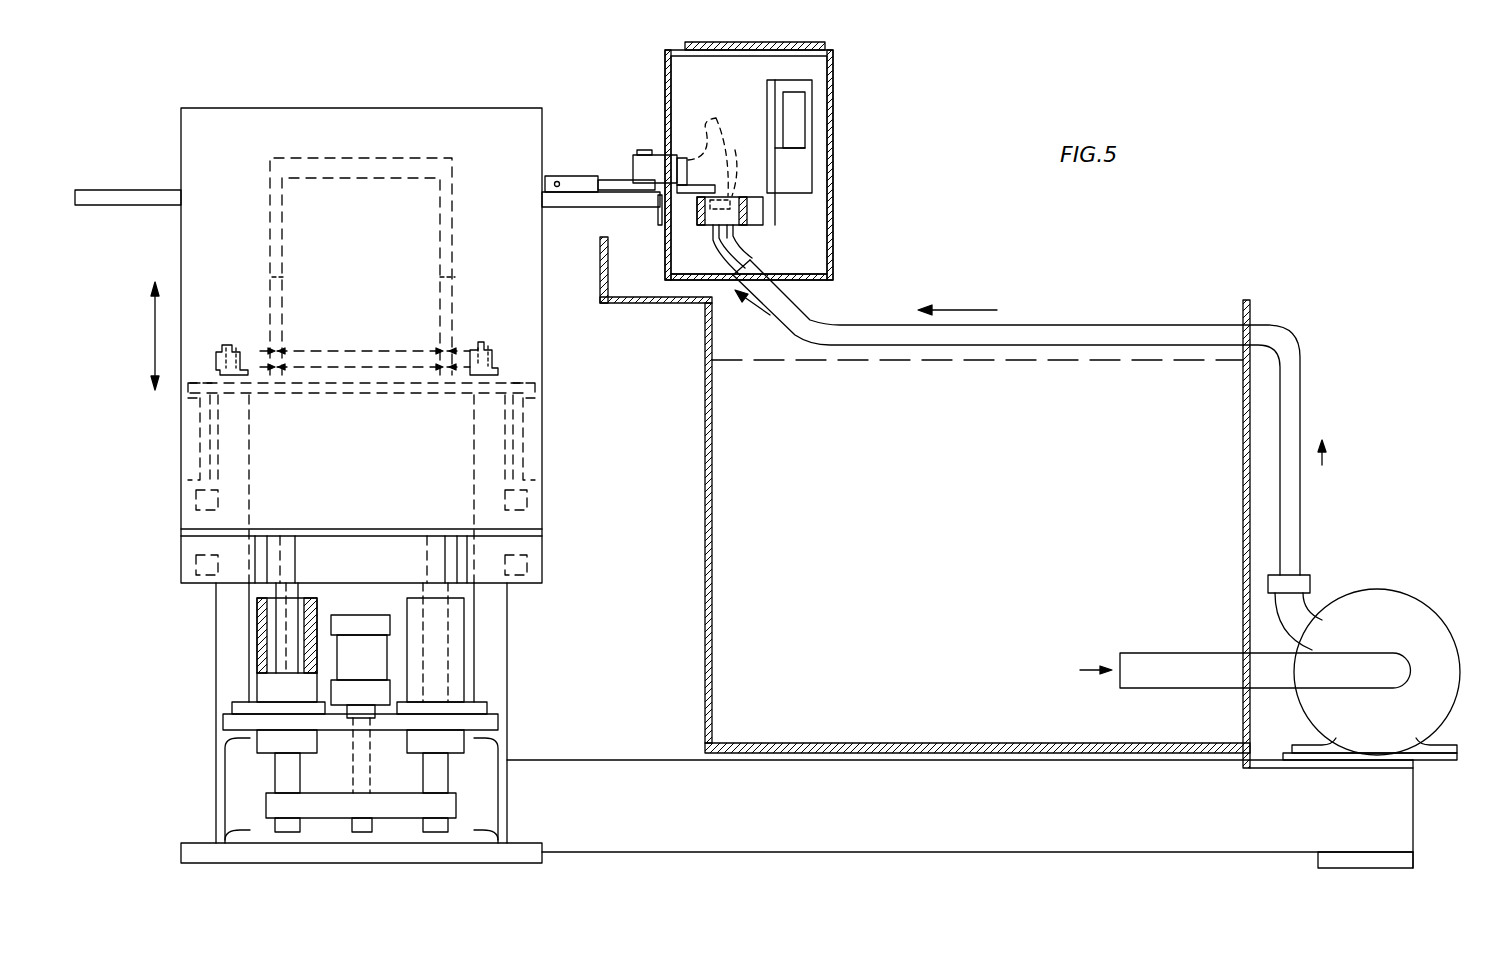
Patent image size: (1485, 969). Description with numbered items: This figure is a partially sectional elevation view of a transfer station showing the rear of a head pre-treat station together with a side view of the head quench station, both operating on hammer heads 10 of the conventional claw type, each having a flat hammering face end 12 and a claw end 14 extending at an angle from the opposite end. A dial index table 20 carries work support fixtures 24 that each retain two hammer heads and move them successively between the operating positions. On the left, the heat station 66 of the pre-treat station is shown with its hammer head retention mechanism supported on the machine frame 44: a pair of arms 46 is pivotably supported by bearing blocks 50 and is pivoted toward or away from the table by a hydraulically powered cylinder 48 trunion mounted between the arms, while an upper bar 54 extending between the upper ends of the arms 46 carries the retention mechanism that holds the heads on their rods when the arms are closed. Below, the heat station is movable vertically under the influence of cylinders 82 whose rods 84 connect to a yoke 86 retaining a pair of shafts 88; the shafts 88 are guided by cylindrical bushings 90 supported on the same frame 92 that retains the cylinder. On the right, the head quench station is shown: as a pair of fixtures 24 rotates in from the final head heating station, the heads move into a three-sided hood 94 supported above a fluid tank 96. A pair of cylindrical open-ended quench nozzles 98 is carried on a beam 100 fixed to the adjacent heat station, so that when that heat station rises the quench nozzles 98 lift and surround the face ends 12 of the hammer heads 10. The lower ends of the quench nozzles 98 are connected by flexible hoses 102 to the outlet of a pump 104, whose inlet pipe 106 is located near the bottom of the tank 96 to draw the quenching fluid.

The hammer head 10 is at (727, 160).
The hammering face end 12 is at (730, 212).
The claw end 14 is at (708, 128).
The dial index table 20 is at (582, 206).
The work support fixture 24 is at (634, 170).
The machine frame 44 is at (355, 395).
The arms 46 is at (287, 278).
The hydraulically powered cylinder 48 is at (262, 345).
The bearing blocks 50 is at (228, 344).
The upper bar 54 is at (365, 168).
The heat station 66 is at (508, 160).
The cylinders 82 is at (358, 617).
The rods 84 is at (372, 773).
The yoke 86 is at (392, 808).
The shafts 88 is at (290, 775).
The cylindrical bushings 90 is at (262, 656).
The frame 92 is at (500, 723).
The three-sided hood 94 is at (748, 42).
The fluid tank 96 is at (713, 500).
The quench nozzles 98 is at (748, 226).
The beam 100 is at (812, 178).
The flexible hoses 102 is at (1045, 335).
The pump 104 is at (1370, 602).
The inlet pipe 106 is at (1148, 658).